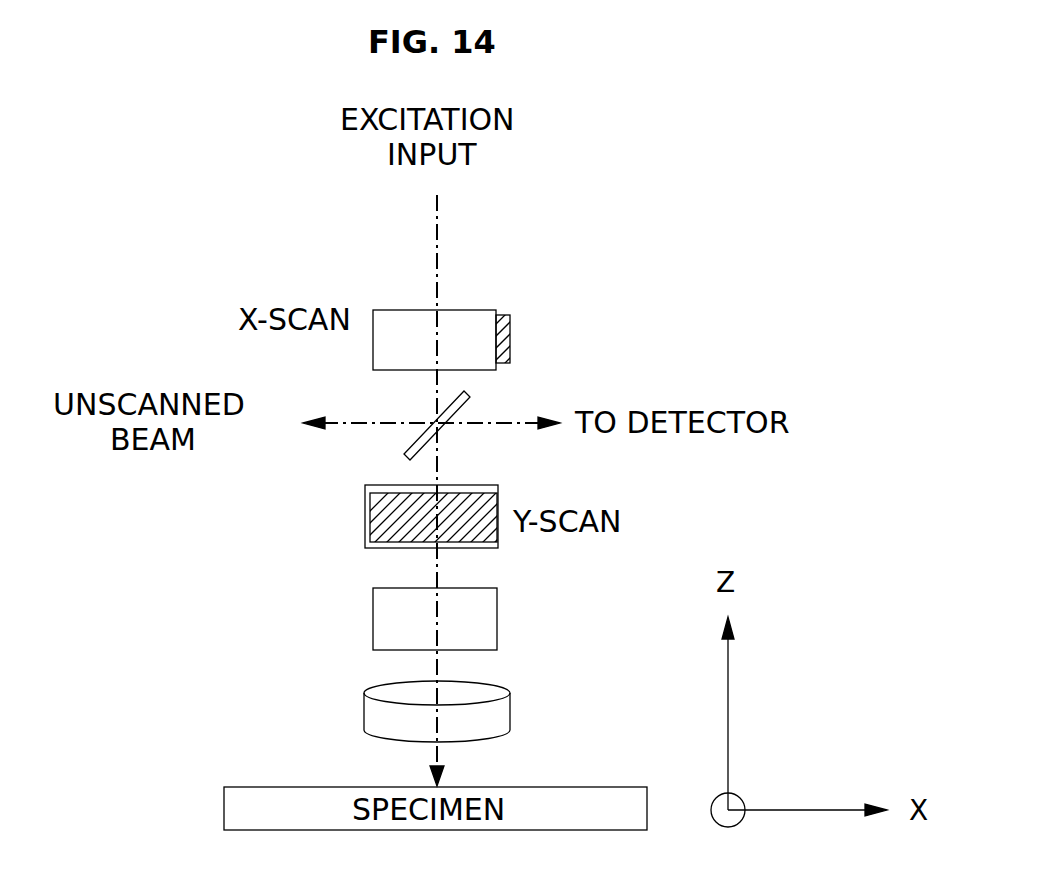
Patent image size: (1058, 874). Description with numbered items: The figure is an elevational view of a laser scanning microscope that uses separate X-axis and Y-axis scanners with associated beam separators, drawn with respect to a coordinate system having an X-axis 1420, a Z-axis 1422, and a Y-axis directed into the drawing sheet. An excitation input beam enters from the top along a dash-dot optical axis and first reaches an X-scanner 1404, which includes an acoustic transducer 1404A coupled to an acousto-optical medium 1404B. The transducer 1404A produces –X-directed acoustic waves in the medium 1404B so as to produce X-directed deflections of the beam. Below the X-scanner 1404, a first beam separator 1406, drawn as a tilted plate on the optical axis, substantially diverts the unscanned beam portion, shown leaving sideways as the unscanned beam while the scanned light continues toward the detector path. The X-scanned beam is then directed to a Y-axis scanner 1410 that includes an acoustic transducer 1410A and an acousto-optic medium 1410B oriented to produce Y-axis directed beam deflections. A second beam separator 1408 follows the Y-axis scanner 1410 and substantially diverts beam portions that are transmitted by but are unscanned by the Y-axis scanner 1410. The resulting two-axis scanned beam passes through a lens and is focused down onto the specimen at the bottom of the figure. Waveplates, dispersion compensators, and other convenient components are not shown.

The X-scanner 1404 is at (502, 289).
The acoustic transducer 1404A is at (510, 351).
The acousto-optical medium 1404B is at (463, 310).
The first beam separator 1406 is at (404, 450).
The second beam separator 1408 is at (497, 618).
The Y-axis scanner 1410 is at (452, 524).
The acoustic transducer 1410A is at (370, 511).
The acousto-optic medium 1410B is at (463, 550).
The X-axis 1420 is at (802, 810).
The Z-axis 1422 is at (728, 710).